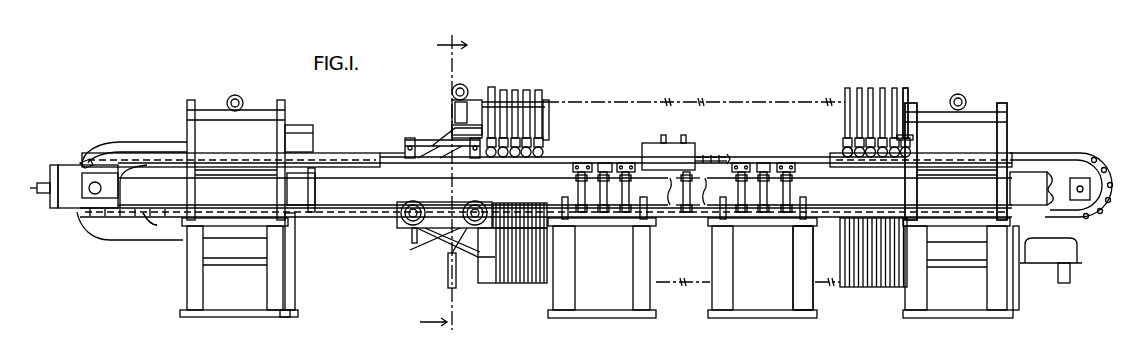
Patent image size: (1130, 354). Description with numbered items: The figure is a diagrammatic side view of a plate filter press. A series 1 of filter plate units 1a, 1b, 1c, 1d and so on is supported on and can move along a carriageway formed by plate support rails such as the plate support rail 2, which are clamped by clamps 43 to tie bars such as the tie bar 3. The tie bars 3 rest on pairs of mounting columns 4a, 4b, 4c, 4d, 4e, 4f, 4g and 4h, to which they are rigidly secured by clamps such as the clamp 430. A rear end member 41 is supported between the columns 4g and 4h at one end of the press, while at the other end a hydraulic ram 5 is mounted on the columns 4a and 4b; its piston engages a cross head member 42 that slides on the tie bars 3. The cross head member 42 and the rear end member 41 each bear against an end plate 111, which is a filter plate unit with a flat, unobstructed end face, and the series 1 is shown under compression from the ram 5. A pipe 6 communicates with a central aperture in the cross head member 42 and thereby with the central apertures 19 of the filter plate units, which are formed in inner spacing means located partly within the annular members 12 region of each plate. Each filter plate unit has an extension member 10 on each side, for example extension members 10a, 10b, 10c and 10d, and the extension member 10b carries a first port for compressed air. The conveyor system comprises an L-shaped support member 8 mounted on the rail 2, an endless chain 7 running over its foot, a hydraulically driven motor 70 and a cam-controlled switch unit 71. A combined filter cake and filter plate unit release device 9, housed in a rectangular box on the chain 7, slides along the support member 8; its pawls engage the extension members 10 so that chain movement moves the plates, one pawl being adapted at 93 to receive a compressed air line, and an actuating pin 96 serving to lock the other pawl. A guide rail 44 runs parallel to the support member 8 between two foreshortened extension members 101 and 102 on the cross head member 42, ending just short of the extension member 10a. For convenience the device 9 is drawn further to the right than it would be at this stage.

The series of filter plate units 1 is at (514, 298).
The filter plate unit 1a is at (513, 88).
The filter plate unit 1b is at (522, 88).
The filter plate unit 1c is at (533, 90).
The filter plate unit 1d is at (540, 92).
The end plate 111 is at (503, 85).
The plate support rail 2 is at (382, 162).
The tie bar 3 is at (338, 193).
The mounting column 4a is at (187, 295).
The mounting column 4b is at (284, 297).
The mounting column 4c is at (557, 298).
The mounting column 4d is at (650, 293).
The mounting column 4e is at (715, 260).
The mounting column 4f is at (808, 297).
The mounting column 4g is at (912, 305).
The mounting column 4h is at (1012, 305).
The hydraulic ram 5 is at (113, 237).
The pipe 6 is at (447, 287).
The endless chain 7 is at (88, 163).
The support member 8 is at (338, 153).
The combined filter cake and filter plate unit release device 9 is at (648, 143).
The extension member 10 is at (838, 143).
The extension member 10a is at (496, 160).
The extension member 10b is at (508, 163).
The extension member 10c is at (521, 163).
The extension member 10d is at (550, 142).
The annular member 12 is at (455, 183).
The central aperture 19 is at (410, 226).
The rear end member 41 is at (987, 97).
The cross head member 42 is at (480, 100).
The clamp 43 is at (627, 163).
The guide rail 44 is at (423, 140).
The hydraulically driven motor 70 is at (1076, 178).
The cam-controlled switch unit 71 is at (1047, 255).
The compressed air line connection 93 is at (665, 135).
The actuating pin 96 is at (686, 135).
The foreshortened extension member 101 is at (403, 153).
The foreshortened extension member 102 is at (453, 125).
The clamp 430 is at (603, 195).